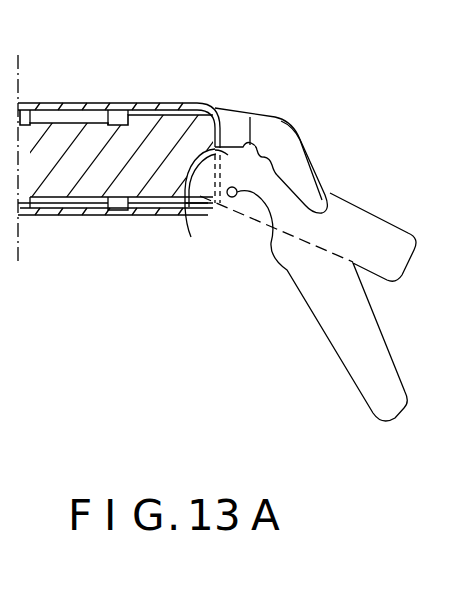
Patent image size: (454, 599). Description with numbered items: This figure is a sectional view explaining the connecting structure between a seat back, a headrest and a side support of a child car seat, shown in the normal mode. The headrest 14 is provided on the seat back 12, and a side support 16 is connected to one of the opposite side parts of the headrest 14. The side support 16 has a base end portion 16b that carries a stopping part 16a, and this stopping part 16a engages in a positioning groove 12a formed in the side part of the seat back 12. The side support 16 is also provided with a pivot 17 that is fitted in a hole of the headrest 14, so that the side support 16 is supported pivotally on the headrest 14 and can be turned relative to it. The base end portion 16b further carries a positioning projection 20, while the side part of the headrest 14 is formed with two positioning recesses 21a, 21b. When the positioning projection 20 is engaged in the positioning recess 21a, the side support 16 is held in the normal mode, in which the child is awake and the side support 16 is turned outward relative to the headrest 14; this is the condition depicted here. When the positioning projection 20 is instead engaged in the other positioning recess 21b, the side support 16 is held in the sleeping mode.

The seat back 12 is at (65, 122).
The positioning groove 12a is at (186, 207).
The headrest 14 is at (228, 110).
The side support 16 is at (350, 363).
The stopping part 16a is at (205, 180).
The base end portion 16b is at (228, 158).
The pivot 17 is at (270, 244).
The positioning projection 20 is at (265, 157).
The positioning recess 21a is at (247, 148).
The positioning recess 21b is at (276, 172).